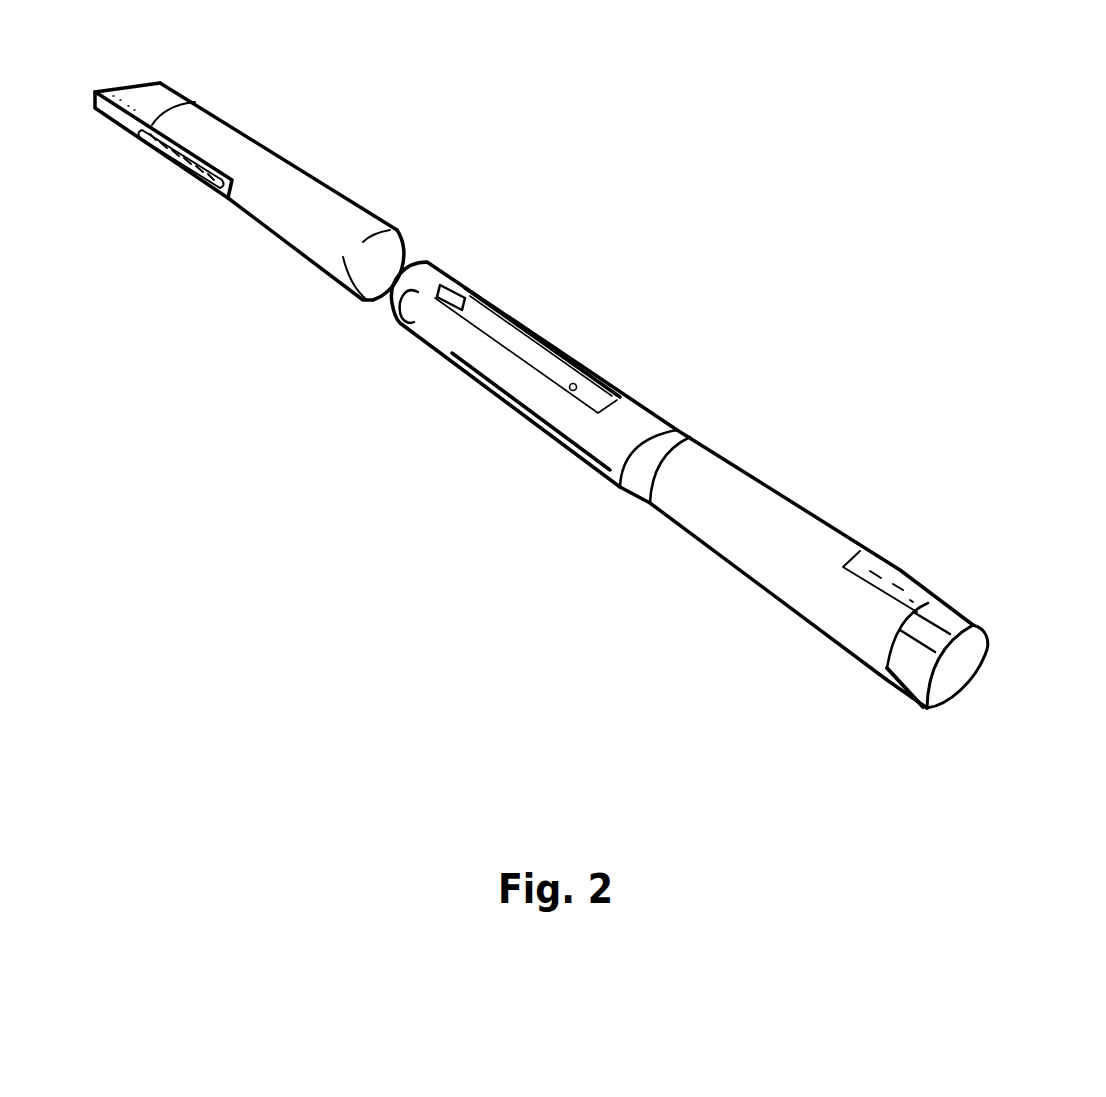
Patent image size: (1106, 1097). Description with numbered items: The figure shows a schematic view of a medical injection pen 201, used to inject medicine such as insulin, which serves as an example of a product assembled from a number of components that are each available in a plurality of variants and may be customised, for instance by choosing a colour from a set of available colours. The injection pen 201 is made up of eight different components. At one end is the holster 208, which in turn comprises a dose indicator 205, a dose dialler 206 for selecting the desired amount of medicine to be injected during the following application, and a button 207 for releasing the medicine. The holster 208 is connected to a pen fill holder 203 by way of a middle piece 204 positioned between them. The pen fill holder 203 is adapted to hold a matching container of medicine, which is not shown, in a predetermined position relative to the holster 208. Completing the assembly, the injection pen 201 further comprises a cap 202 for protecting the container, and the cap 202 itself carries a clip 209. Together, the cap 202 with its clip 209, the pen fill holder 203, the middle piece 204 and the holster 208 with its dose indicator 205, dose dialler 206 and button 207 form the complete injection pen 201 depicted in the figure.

The injection pen 201 is at (408, 439).
The cap 202 is at (317, 200).
The pen fill holder 203 is at (455, 332).
The middle piece 204 is at (647, 463).
The dose indicator 205 is at (867, 567).
The dose dialler 206 is at (913, 655).
The button 207 is at (953, 670).
The holster 208 is at (780, 523).
The clip 209 is at (122, 123).